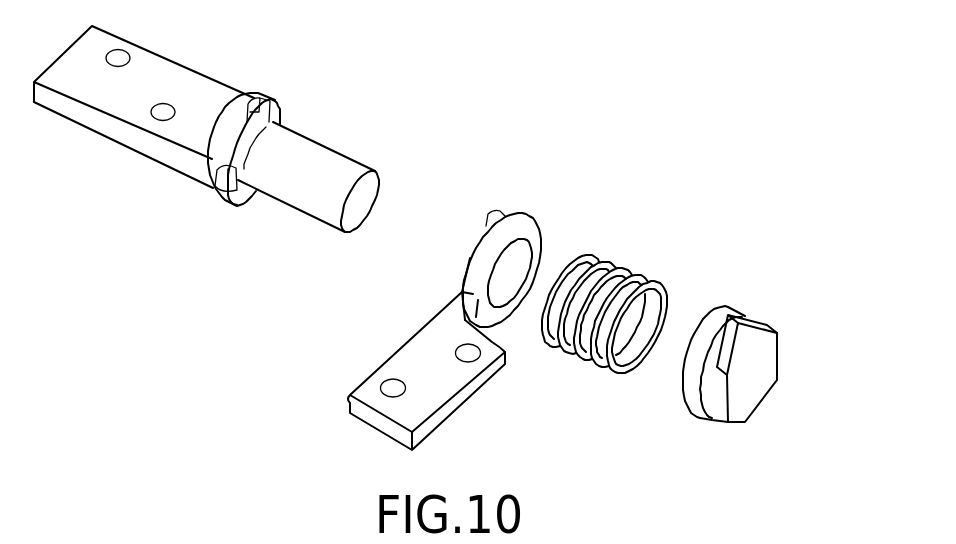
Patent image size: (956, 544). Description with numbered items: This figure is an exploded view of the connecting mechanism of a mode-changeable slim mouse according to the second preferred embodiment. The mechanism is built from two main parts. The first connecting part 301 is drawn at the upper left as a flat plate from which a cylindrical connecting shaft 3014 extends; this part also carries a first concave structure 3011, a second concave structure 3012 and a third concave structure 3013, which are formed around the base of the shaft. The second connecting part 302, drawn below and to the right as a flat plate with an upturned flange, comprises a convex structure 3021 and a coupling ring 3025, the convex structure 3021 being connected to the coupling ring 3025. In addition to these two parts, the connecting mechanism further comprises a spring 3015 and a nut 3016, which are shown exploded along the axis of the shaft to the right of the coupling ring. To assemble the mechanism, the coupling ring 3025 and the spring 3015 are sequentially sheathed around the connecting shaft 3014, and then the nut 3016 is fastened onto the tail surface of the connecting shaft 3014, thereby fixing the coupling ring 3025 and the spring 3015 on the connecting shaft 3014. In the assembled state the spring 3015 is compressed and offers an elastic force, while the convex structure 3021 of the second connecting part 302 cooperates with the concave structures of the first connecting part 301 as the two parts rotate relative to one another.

The first connecting part 301 is at (165, 75).
The first concave structure 3011 is at (257, 193).
The second concave structure 3012 is at (208, 182).
The third concave structure 3013 is at (255, 103).
The connecting shaft 3014 is at (315, 157).
The second connecting part 302 is at (412, 362).
The convex structure 3021 is at (493, 217).
The coupling ring 3025 is at (510, 215).
The spring 3015 is at (618, 282).
The nut 3016 is at (762, 370).